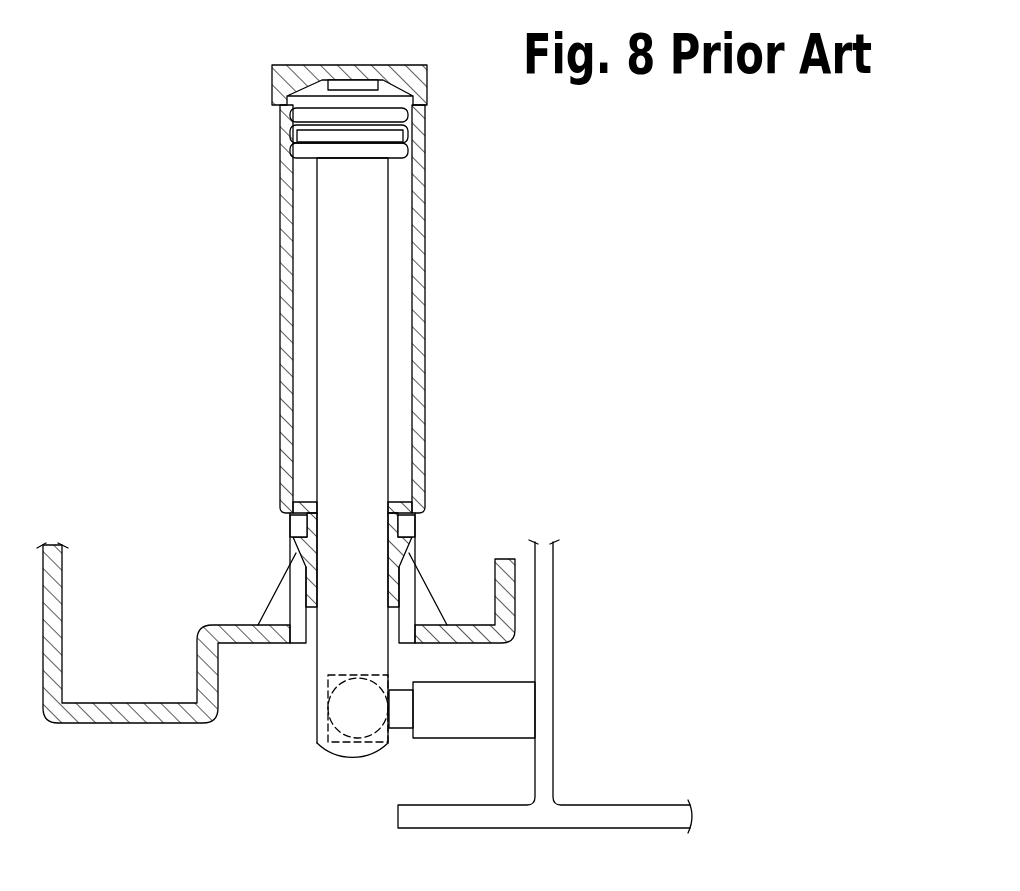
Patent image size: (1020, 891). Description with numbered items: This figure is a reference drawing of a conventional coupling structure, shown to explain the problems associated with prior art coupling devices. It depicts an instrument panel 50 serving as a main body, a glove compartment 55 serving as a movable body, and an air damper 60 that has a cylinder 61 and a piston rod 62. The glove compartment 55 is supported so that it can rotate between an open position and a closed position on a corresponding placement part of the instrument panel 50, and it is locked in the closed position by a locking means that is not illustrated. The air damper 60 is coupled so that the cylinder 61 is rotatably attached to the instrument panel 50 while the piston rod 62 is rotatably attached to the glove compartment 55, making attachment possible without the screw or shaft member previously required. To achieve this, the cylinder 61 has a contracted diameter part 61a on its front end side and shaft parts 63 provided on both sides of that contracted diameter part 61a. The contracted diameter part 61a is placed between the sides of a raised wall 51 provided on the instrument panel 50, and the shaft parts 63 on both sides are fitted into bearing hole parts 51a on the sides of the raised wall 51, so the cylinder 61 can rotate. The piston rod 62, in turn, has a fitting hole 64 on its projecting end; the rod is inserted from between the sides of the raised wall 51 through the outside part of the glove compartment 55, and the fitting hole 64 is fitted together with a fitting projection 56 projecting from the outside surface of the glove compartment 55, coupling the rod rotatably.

The instrument panel 50 is at (63, 600).
The raised wall 51 is at (288, 518).
The bearing hole part 51a is at (298, 605).
The glove compartment 55 is at (556, 604).
The fitting projection 56 is at (437, 728).
The air damper 60 is at (575, 133).
The cylinder 61 is at (423, 255).
The contracted diameter part 61a is at (396, 523).
The piston rod 62 is at (373, 208).
The shaft part 63 is at (293, 545).
The fitting hole 64 is at (322, 742).